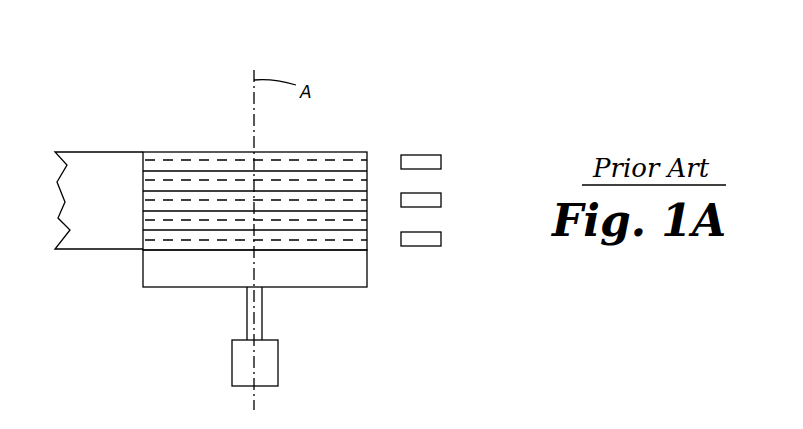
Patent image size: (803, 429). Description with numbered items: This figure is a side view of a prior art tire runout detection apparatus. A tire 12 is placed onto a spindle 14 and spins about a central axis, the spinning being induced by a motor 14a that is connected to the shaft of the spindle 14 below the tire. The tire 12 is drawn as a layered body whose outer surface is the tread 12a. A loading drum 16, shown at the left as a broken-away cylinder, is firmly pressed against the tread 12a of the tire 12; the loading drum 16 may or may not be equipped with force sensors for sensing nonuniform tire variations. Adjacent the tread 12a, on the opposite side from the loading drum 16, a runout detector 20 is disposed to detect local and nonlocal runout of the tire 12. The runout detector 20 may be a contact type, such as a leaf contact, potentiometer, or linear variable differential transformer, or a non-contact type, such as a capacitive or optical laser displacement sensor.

The tire 12 is at (182, 133).
The tread 12a is at (342, 226).
The spindle 14 is at (349, 299).
The motor 14a is at (278, 360).
The loading drum 16 is at (106, 250).
The runout detector 20 is at (426, 134).